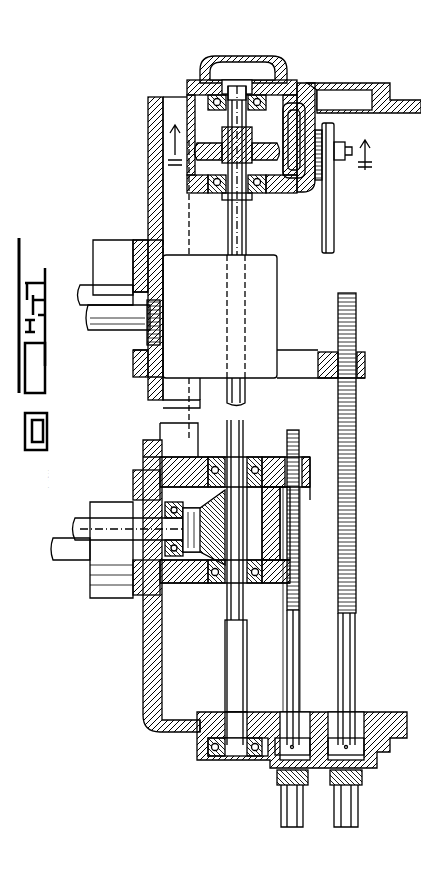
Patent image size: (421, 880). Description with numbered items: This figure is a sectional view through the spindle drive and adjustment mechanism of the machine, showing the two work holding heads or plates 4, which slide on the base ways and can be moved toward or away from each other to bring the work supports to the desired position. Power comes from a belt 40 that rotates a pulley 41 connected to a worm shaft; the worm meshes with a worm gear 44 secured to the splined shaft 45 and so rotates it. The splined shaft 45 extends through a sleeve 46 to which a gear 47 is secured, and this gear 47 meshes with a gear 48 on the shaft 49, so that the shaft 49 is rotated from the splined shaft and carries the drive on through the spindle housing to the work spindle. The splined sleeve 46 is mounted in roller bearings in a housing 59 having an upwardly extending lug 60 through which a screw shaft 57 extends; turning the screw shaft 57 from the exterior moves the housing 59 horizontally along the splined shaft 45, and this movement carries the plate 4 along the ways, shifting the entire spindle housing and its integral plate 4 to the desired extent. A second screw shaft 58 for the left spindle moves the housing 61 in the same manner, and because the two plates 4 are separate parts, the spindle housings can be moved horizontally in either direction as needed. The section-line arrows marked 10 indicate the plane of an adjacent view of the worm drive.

The work holding head 4 is at (148, 110).
The section line 10- 10 is at (175, 150).
The belt 40 is at (330, 250).
The pulley 41 is at (330, 182).
The worm gear 44 is at (190, 182).
The splined shaft 45 is at (246, 222).
The sleeve 46 is at (250, 548).
The gear 47 is at (299, 520).
The gear 48 is at (198, 575).
The shaft 49 is at (133, 322).
The screw shaft 57 is at (299, 622).
The screw shaft 58 is at (352, 625).
The housing 59 is at (280, 560).
The lug 60 is at (300, 458).
The housing 61 is at (262, 275).